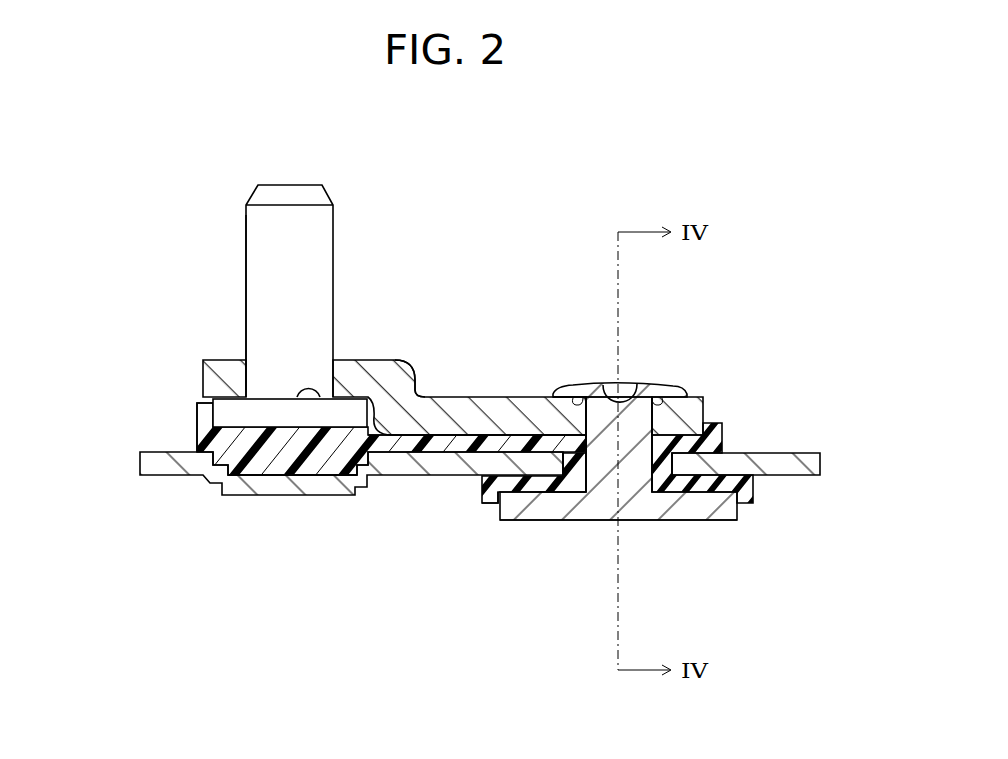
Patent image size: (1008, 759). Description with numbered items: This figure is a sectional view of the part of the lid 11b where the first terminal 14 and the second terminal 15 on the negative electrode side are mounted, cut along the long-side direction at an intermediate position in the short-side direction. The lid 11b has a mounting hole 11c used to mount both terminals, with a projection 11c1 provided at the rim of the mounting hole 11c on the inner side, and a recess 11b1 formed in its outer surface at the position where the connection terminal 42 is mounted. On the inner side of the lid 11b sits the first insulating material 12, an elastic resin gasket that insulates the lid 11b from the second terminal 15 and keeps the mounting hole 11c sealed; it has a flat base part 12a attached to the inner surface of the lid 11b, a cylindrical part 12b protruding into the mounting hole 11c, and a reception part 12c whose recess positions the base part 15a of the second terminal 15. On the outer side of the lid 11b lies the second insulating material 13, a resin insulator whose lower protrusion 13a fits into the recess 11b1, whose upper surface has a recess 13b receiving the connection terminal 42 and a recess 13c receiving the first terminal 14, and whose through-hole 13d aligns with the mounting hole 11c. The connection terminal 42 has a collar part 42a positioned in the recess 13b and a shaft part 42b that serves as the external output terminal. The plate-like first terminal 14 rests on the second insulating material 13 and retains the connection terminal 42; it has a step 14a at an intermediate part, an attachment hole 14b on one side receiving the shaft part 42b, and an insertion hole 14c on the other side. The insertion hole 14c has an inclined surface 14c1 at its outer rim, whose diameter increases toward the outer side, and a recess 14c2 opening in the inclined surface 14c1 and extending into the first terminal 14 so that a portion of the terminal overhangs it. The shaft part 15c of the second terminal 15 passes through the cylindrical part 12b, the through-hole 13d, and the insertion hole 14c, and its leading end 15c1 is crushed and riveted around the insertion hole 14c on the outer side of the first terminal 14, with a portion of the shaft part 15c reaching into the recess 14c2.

The lid 11b is at (805, 452).
The recess 11b1 is at (337, 477).
The mounting hole 11c is at (655, 478).
The projection 11c1 is at (668, 472).
The first insulating material 12 is at (472, 494).
The base part 12a is at (752, 496).
The cylindrical part 12b is at (545, 491).
The reception part 12c is at (530, 494).
The second insulating material 13 is at (186, 438).
The protrusion 13a is at (270, 490).
The recess 13b is at (201, 402).
The recess 13c is at (518, 435).
The through-hole 13d is at (592, 436).
The first terminal 14 is at (478, 388).
The step 14a is at (423, 366).
The attachment hole 14b is at (330, 372).
The insertion hole 14c is at (575, 392).
The inclined surface 14c1 is at (653, 402).
The recess 14c2 is at (690, 397).
The second terminal 15 is at (746, 524).
The base part 15a is at (707, 522).
The shaft part 15c is at (655, 414).
The leading end 15c1 is at (640, 388).
The negative electrode connection terminal 42 is at (324, 178).
The collar part 42a is at (320, 466).
The shaft part 42b is at (246, 270).